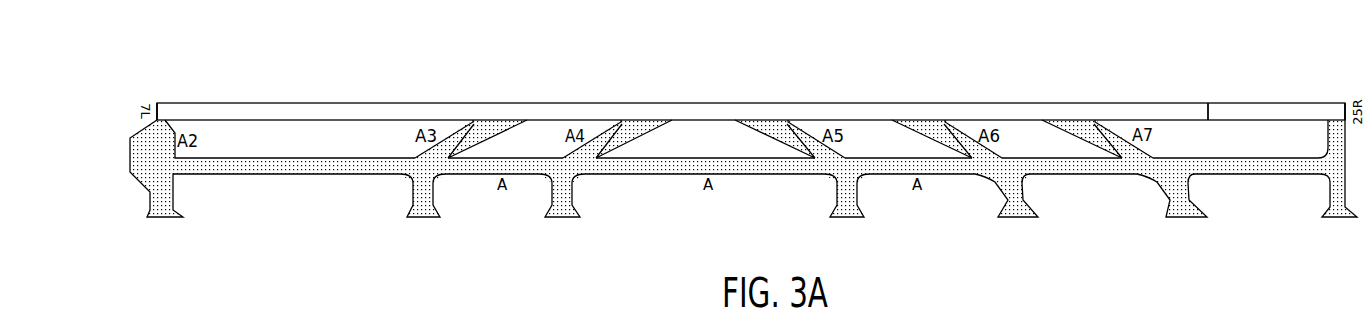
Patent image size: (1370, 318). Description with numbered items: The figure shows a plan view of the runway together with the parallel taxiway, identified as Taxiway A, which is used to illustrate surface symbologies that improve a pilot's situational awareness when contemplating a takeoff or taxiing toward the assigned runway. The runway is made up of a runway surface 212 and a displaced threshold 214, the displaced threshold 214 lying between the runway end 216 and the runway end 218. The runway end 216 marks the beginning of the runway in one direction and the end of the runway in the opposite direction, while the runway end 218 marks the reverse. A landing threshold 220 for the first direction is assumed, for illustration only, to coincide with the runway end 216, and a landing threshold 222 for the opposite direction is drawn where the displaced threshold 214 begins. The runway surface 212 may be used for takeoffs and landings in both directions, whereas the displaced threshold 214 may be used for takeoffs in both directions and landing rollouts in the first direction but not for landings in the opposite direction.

The runway surface 212 is at (1205, 97).
The displaced threshold 214 is at (1343, 97).
The runway end 216 is at (158, 135).
The runway end 218 is at (1347, 135).
The landing threshold 220 is at (158, 135).
The landing threshold 222 is at (1200, 130).